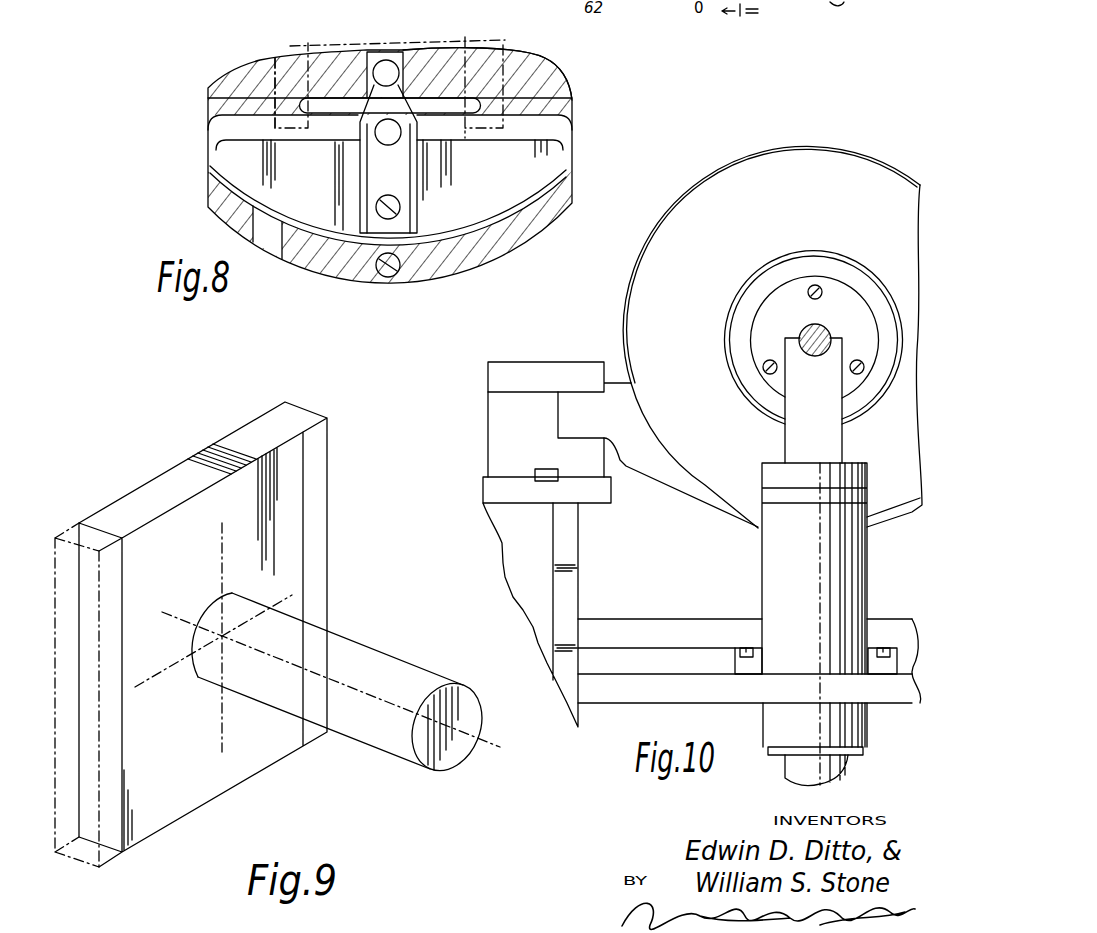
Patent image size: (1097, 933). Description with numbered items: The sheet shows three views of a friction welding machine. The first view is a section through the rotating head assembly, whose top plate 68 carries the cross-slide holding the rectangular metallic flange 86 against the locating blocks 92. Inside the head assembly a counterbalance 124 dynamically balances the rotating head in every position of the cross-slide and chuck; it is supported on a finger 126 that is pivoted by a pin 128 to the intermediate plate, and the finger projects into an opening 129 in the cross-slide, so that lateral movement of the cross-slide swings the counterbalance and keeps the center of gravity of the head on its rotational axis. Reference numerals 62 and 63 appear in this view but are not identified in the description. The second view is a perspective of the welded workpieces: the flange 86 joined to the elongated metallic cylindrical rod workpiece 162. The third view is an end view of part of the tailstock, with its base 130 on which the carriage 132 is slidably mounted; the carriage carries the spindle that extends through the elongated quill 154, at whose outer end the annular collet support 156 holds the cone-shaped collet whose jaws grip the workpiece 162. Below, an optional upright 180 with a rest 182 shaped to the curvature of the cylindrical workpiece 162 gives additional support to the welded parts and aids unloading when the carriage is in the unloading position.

In FIG. 8, the sight body 62 is at (200, 198).
In FIG. 8, the screw 63 is at (386, 277).
In FIG. 8, the top plate 68 is at (530, 72).
In FIG. 8, the rectangular metallic flange 86 is at (352, 34).
In FIG. 9, the rectangular metallic flange 86 is at (173, 475).
In FIG. 8, the locating blocks 92 is at (287, 62).
In FIG. 8, the counterbalance 124 is at (367, 143).
In FIG. 8, the finger 126 is at (372, 143).
In FIG. 8, the pin 128 is at (390, 147).
In FIG. 8, the opening 129 is at (385, 50).
In FIG. 10, the base 130 is at (541, 367).
In FIG. 10, the carriage 132 is at (730, 170).
In FIG. 10, the quill 154 is at (827, 258).
In FIG. 10, the collet support 156 is at (862, 318).
In FIG. 9, the workpiece 162 is at (410, 763).
In FIG. 10, the workpiece 162 is at (812, 325).
In FIG. 10, the upright 180 is at (773, 548).
In FIG. 10, the rest 182 is at (816, 357).